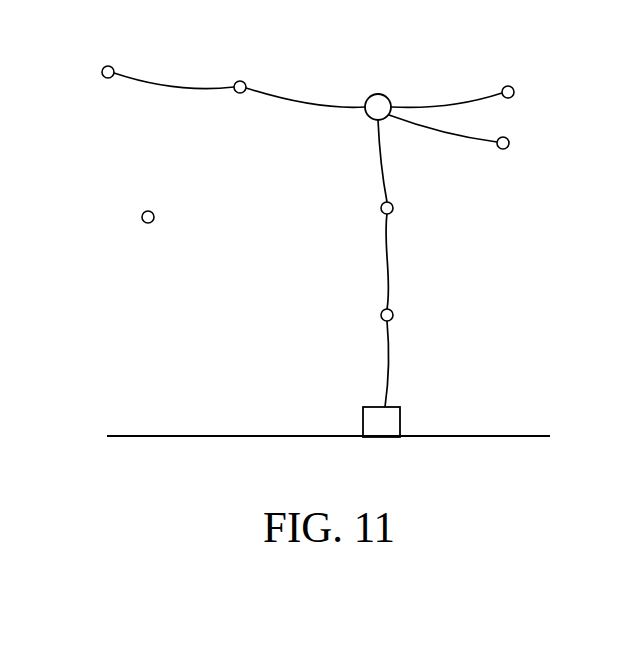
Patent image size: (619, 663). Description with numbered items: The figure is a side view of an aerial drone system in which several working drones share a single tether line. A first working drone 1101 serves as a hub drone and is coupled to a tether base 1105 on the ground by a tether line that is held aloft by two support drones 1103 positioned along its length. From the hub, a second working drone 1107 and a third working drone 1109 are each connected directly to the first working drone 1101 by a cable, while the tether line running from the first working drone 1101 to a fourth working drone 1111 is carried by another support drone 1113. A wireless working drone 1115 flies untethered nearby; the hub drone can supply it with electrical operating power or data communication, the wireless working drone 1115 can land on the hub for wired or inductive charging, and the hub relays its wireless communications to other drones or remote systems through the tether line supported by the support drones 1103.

The first working drone 1101 is at (380, 94).
The support drones 1103 is at (381, 208).
The tether base 1105 is at (363, 425).
The second working drone 1107 is at (508, 86).
The third working drone 1109 is at (509, 143).
The fourth working drone 1111 is at (102, 72).
The support drone 1113 is at (238, 81).
The wireless working drone 1115 is at (142, 216).